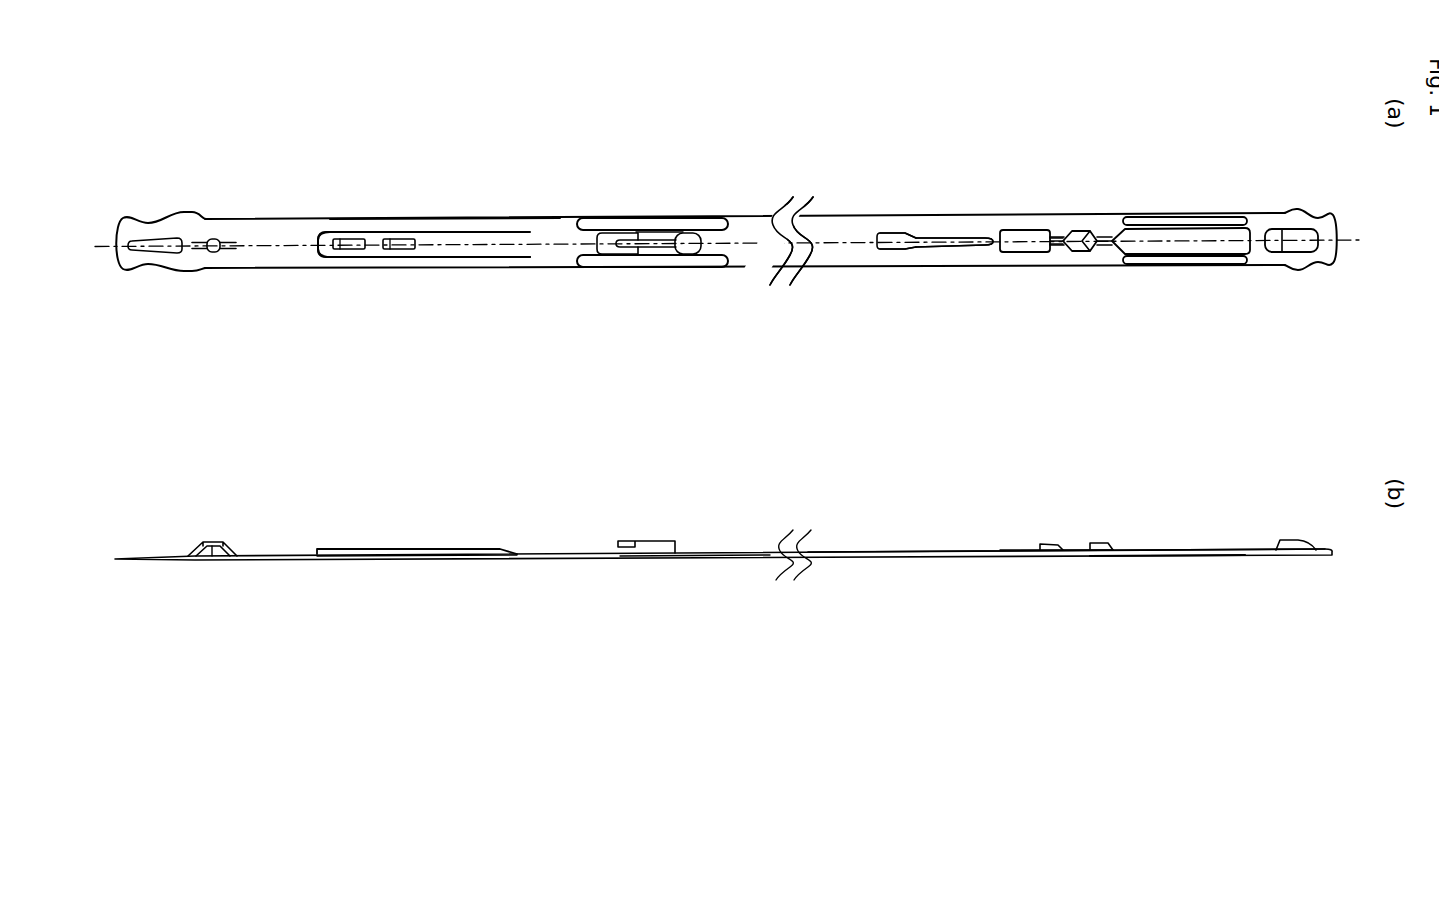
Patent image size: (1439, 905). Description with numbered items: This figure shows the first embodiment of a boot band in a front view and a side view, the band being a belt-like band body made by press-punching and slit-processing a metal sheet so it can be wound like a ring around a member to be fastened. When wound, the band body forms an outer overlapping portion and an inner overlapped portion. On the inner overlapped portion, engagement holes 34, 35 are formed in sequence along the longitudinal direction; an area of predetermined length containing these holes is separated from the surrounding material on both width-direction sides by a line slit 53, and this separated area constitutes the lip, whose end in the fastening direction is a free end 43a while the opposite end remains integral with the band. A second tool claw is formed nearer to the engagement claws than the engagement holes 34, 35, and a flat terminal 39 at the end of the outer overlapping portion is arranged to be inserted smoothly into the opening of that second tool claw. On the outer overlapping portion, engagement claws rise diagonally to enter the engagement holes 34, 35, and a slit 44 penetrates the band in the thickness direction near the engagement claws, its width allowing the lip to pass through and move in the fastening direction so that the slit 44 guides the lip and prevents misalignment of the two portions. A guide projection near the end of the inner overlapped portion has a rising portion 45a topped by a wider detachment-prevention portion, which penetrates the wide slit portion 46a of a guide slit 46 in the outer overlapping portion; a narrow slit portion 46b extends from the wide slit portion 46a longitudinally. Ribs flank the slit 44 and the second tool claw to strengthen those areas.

The engagement hole 34 is at (401, 250).
The engagement hole 35 is at (352, 250).
The terminal 39 is at (1327, 240).
The free end 43a is at (311, 245).
The slit 44 is at (1212, 235).
The rising portion 45a is at (207, 252).
The guide slit 46 is at (932, 256).
The wide slit portion 46a is at (893, 246).
The narrow slit portion 46b is at (978, 251).
The line slit 53 is at (470, 258).